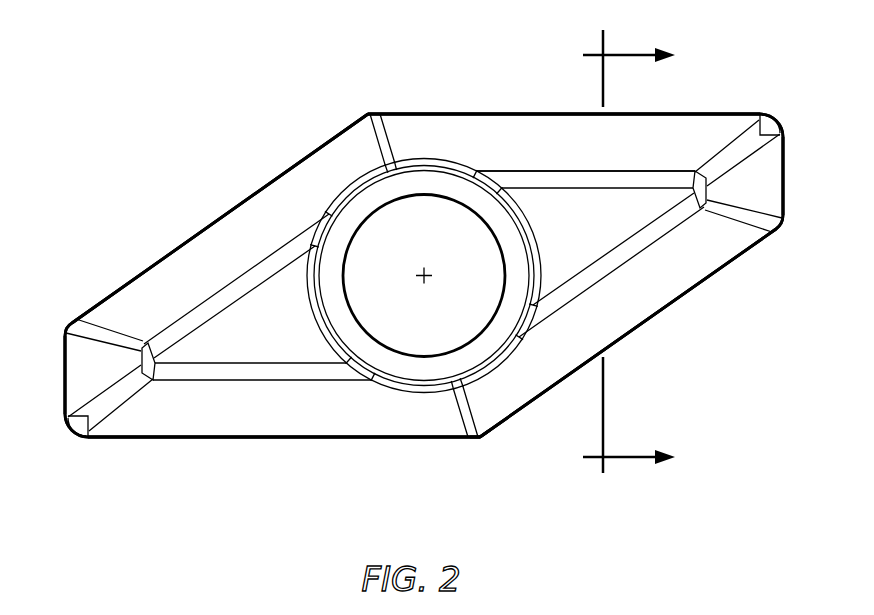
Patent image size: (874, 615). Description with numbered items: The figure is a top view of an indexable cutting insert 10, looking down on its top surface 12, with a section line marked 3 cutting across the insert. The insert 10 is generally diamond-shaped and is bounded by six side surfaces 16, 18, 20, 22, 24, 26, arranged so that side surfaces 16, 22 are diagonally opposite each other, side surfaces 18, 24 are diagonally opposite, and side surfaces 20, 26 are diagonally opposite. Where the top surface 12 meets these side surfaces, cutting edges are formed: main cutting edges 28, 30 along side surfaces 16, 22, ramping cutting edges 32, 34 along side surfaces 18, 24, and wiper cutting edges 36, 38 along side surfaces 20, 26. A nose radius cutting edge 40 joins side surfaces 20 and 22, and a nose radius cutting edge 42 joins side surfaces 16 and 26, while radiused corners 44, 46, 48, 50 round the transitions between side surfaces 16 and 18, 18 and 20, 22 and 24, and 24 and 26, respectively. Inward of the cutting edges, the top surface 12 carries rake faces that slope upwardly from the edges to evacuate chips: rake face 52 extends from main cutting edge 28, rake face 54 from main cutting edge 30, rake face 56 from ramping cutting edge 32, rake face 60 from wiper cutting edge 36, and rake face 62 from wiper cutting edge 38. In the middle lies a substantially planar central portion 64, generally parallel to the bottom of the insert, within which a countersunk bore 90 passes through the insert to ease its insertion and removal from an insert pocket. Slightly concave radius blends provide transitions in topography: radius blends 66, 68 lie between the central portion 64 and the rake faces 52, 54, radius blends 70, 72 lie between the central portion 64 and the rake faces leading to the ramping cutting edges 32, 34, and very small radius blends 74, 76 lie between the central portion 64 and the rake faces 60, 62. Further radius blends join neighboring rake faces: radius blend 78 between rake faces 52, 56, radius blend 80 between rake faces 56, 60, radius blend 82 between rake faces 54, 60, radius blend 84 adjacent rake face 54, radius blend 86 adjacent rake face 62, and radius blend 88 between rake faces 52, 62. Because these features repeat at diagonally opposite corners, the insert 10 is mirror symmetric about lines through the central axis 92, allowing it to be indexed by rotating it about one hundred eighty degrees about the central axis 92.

The section line 3- 3 is at (629, 257).
The indexable cutting insert 10 is at (118, 90).
The top surface 12 is at (258, 305).
The side surface 16 is at (285, 442).
The side surface 18 is at (647, 326).
The side surface 20 is at (787, 160).
The side surface 22 is at (702, 108).
The side surface 24 is at (221, 202).
The side surface 26 is at (63, 370).
The main cutting edge 28 is at (243, 440).
The main cutting edge 30 is at (480, 113).
The ramping cutting edge 32 is at (708, 280).
The ramping cutting edge 34 is at (318, 148).
The wiper cutting edge 36 is at (787, 180).
The wiper cutting edge 38 is at (65, 400).
The nose radius cutting edge 40 is at (777, 115).
The nose radius cutting edge 42 is at (72, 432).
The radiused corner 44 is at (472, 438).
The radiused corner 46 is at (782, 225).
The radiused corner 48 is at (187, 262).
The radiused corner 50 is at (72, 322).
The rake face 52 is at (210, 413).
The rake face 54 is at (523, 123).
The rake face 56 is at (538, 358).
The rake face 60 is at (760, 193).
The rake face 62 is at (83, 353).
The central portion 64 is at (623, 203).
The radius blend 66 is at (262, 372).
The radius blend 68 is at (525, 180).
The radius blend 70 is at (647, 240).
The radius blend 72 is at (273, 257).
The radius blend 74 is at (700, 193).
The radius blend 76 is at (167, 357).
The radius blend 78 is at (467, 410).
The radius blend 80 is at (745, 213).
The radius blend 82 is at (723, 163).
The radius blend 84 is at (385, 148).
The radius blend 86 is at (105, 333).
The radius blend 88 is at (117, 393).
The countersunk bore 90 is at (478, 238).
The central axis 92 is at (422, 271).